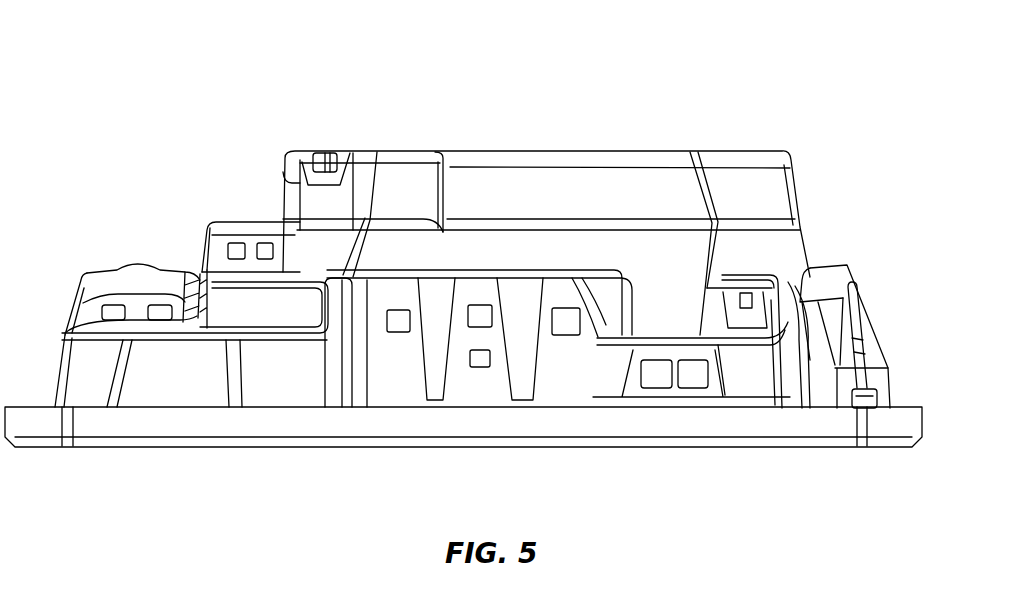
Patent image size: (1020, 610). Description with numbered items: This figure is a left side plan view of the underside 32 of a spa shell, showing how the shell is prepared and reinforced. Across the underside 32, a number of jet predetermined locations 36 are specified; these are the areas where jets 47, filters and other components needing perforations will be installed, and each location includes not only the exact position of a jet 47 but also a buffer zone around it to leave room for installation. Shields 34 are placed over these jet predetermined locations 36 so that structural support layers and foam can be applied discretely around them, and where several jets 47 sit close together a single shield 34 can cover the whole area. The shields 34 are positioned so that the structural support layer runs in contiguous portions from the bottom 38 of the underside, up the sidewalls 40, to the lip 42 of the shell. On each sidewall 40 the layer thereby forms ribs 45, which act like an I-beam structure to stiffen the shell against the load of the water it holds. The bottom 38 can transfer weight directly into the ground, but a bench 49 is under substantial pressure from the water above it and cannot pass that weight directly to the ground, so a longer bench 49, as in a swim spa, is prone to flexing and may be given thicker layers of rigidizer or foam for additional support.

The underside of the spa shell 32 is at (138, 66).
The shield 34 is at (100, 302).
The jet predetermined location 36 is at (132, 298).
The bottom 38 is at (638, 158).
The sidewall 40 is at (628, 253).
The lip 42 is at (30, 420).
The rib 45 is at (613, 377).
The jet 47 is at (400, 322).
The bench 49 is at (487, 273).